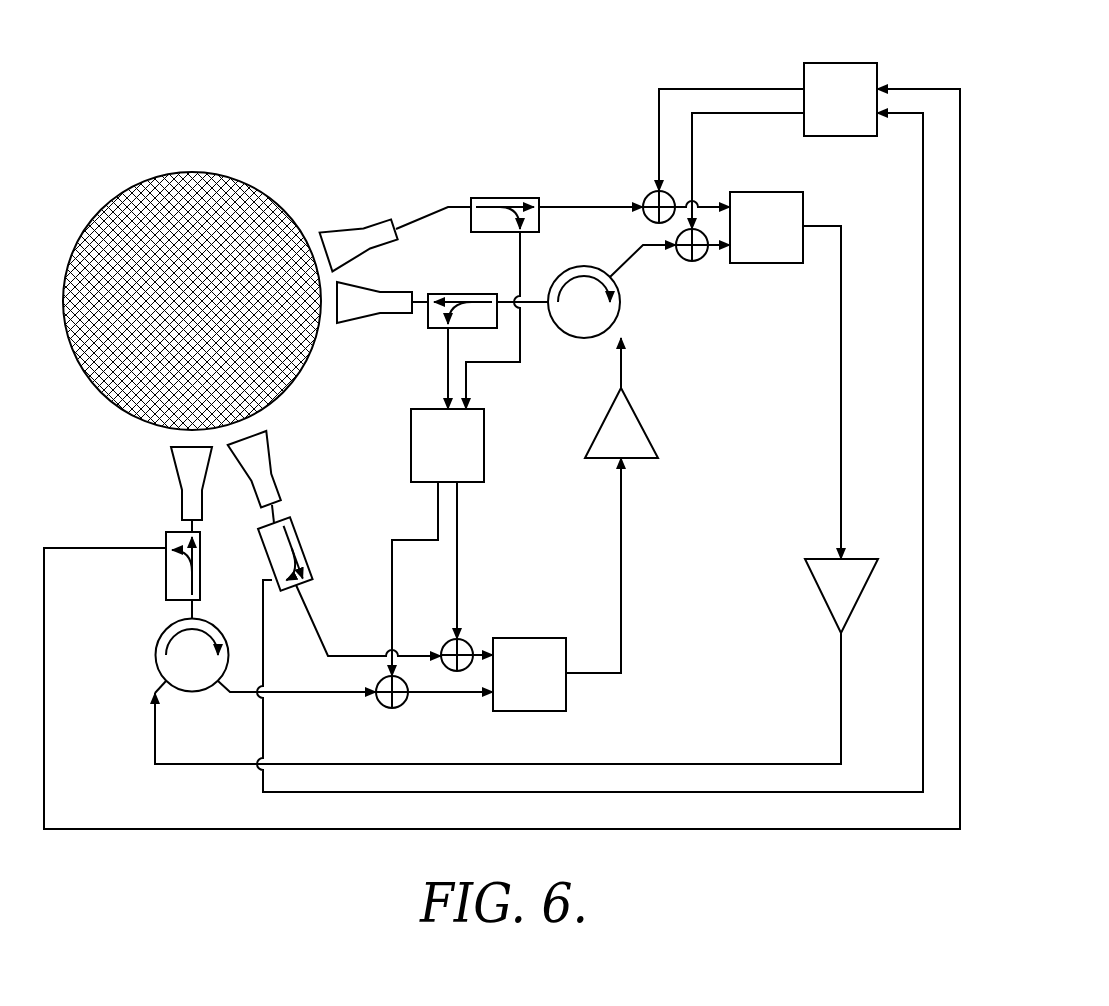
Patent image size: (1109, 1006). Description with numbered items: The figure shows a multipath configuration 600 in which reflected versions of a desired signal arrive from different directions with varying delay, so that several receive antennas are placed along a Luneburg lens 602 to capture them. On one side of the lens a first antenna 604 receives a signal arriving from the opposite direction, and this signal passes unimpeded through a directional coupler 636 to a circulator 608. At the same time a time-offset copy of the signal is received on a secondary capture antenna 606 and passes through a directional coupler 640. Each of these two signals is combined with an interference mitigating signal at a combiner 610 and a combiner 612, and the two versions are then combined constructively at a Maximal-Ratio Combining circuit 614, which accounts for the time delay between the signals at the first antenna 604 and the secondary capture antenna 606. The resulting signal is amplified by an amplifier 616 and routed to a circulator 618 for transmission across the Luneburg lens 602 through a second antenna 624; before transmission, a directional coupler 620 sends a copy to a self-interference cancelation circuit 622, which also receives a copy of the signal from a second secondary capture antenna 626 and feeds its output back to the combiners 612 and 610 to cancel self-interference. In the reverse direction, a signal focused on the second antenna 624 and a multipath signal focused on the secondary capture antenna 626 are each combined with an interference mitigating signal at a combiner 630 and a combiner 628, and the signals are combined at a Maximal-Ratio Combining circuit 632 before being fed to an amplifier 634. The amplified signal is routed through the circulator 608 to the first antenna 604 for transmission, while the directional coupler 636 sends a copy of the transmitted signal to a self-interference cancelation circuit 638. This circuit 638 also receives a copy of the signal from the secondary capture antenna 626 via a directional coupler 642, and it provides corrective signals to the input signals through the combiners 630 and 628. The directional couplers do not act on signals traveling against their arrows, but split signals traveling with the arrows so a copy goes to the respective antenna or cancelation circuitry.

The multipath configuration 600 is at (224, 60).
The Luneburg lens 602 is at (278, 203).
The first antenna 604 is at (178, 489).
The secondary capture antenna 606 is at (274, 453).
The circulator 608 is at (156, 666).
The combiner 610 is at (405, 701).
The combiner 612 is at (470, 640).
The Maximal-Ratio Combining circuitry 614 is at (548, 637).
The amplifier 616 is at (600, 420).
The circulator 618 is at (621, 303).
The directional coupler 620 is at (462, 292).
The self-interference cancelation circuitry 622 is at (486, 444).
The second antenna 624 is at (363, 318).
The secondary capture antenna 626 is at (358, 227).
The combiner 628 is at (702, 263).
The combiner 630 is at (645, 196).
The Maximal-Ratio Combining circuitry 632 is at (775, 264).
The amplifier 634 is at (820, 601).
The directional coupler 636 is at (165, 571).
The self-interference cancelation circuitry 638 is at (836, 62).
The directional coupler 640 is at (302, 548).
The directional coupler 642 is at (497, 197).